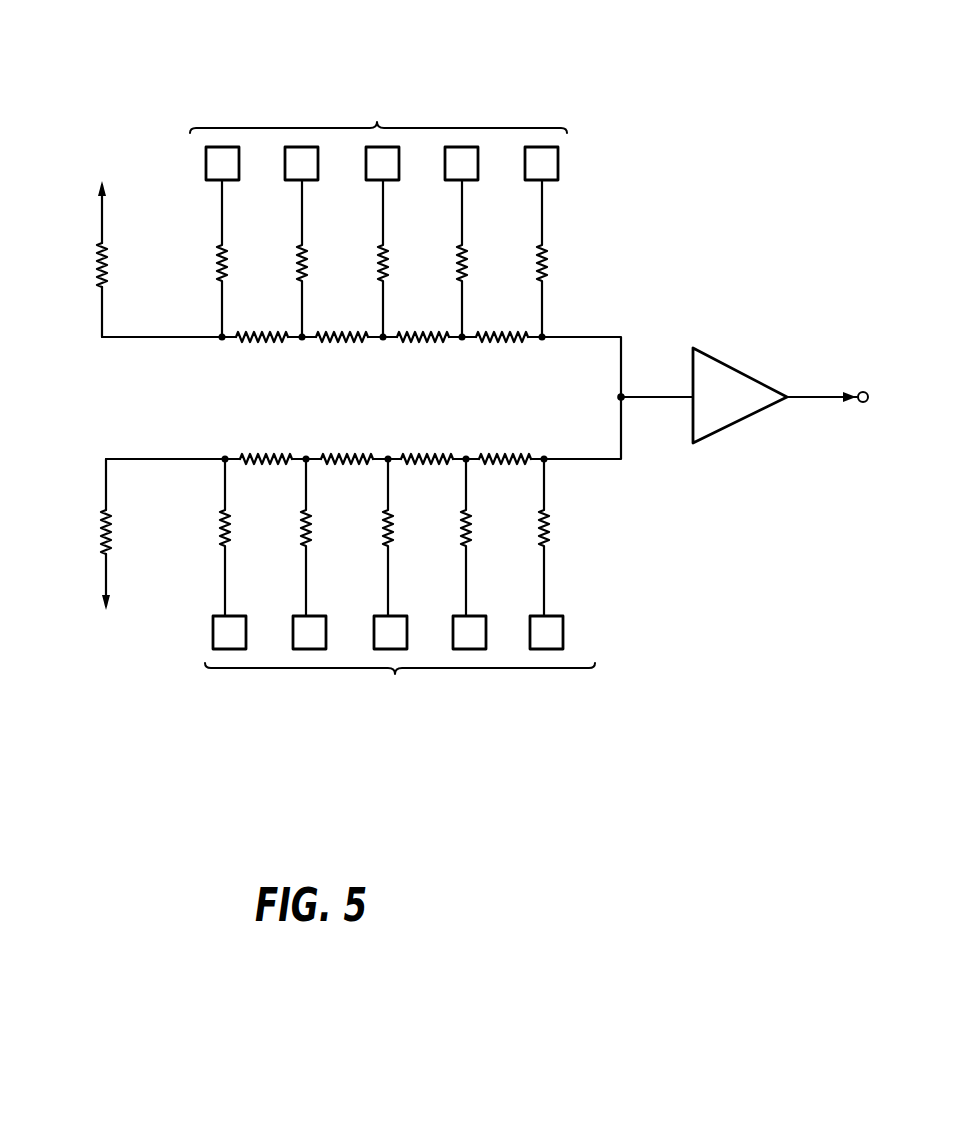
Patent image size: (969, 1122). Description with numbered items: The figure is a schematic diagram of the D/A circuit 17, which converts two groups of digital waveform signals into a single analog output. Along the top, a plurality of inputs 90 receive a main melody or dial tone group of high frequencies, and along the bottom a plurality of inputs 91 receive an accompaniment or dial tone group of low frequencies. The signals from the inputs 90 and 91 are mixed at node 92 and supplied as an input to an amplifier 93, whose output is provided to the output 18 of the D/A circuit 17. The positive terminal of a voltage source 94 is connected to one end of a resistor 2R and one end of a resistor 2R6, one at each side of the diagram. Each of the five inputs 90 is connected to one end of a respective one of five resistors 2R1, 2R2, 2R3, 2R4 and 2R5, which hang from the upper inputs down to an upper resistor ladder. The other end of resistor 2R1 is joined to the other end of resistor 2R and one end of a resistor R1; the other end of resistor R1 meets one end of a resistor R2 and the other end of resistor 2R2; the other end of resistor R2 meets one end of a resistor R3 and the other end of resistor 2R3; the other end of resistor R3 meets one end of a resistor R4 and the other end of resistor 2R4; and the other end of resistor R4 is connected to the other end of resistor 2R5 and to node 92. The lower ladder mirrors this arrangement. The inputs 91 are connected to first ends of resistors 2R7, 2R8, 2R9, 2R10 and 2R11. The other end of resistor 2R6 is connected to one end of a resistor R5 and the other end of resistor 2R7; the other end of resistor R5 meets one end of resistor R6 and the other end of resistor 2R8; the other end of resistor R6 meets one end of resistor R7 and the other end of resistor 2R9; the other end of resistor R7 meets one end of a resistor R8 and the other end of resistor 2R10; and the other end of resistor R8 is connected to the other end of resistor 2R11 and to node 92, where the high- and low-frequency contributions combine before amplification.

The D/A circuit 17 is at (602, 90).
The inputs 90 is at (378, 132).
The inputs 91 is at (400, 670).
The node 92 is at (623, 398).
The amplifier 93 is at (738, 375).
The voltage source 94 is at (106, 188).
The output 18 is at (864, 392).
The resistor 2R is at (97, 269).
The resistor 2R1 is at (229, 270).
The resistor 2R2 is at (308, 268).
The resistor 2R3 is at (389, 270).
The resistor 2R4 is at (468, 268).
The resistor 2R5 is at (548, 270).
The resistor 2R6 is at (100, 544).
The resistor 2R7 is at (231, 535).
The resistor 2R8 is at (312, 533).
The resistor 2R9 is at (394, 535).
The resistor 2R10 is at (472, 533).
The resistor 2R11 is at (550, 535).
The resistor R1 is at (281, 341).
The resistor R2 is at (340, 341).
The resistor R3 is at (413, 341).
The resistor R4 is at (493, 341).
The resistor R5 is at (283, 456).
The resistor R6 is at (360, 456).
The resistor R7 is at (439, 456).
The resistor R8 is at (518, 456).